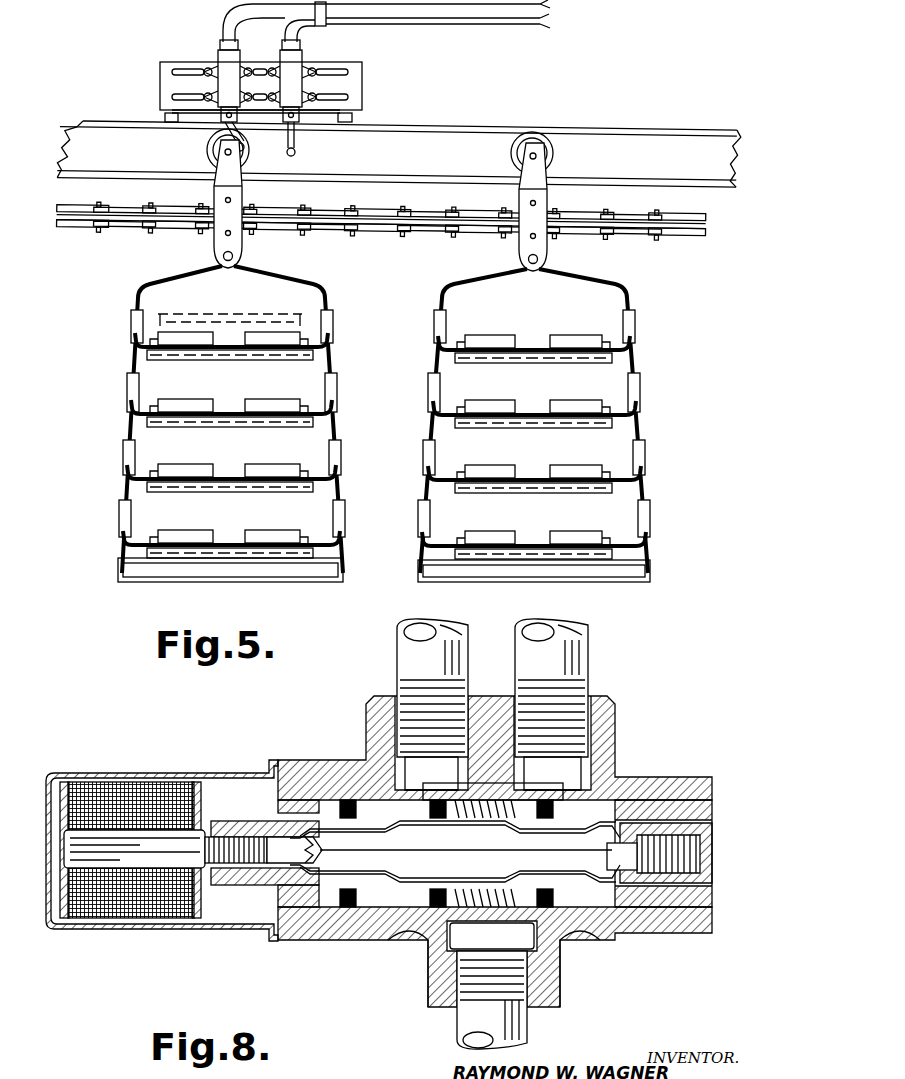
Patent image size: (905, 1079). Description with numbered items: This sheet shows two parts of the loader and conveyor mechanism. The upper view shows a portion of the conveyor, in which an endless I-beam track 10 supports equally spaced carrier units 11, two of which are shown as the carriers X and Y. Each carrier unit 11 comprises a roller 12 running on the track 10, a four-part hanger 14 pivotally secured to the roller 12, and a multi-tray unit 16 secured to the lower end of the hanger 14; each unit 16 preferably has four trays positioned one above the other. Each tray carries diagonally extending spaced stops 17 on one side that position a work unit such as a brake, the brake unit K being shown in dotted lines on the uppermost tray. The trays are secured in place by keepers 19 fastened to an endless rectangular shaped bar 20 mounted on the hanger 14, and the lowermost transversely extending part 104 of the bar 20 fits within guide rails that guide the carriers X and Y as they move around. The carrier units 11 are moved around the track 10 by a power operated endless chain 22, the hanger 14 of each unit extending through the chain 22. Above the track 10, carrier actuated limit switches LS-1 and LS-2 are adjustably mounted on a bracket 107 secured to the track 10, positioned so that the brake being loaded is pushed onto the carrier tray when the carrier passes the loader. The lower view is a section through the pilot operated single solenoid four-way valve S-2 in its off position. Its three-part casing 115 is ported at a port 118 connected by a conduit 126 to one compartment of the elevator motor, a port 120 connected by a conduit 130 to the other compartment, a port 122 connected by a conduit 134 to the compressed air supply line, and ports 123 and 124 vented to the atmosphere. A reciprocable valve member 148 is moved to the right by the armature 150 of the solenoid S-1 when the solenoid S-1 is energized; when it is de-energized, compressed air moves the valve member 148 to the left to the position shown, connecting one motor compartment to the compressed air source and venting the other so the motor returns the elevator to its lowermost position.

In FIG. 5, the I-beam track 10 is at (632, 142).
In FIG. 5, the carrier unit 11 is at (125, 357).
In FIG. 5, the roller 12 is at (208, 150).
In FIG. 5, the four-part hanger 14 is at (241, 190).
In FIG. 5, the multi-tray unit 16 is at (298, 448).
In FIG. 5, the stops 17 is at (265, 340).
In FIG. 5, the keepers 19 is at (128, 392).
In FIG. 5, the endless rectangular shaped bar 20 is at (125, 485).
In FIG. 5, the endless chain 22 is at (430, 228).
In FIG. 5, the lowermost transversely extending part 104 is at (155, 575).
In FIG. 5, the bracket 107 is at (352, 90).
In FIG. 5, the limit switch LS-1 is at (227, 60).
In FIG. 5, the limit switch LS-2 is at (296, 63).
In FIG. 5, the brake unit K is at (193, 316).
In FIG. 5, the carrier X is at (228, 448).
In FIG. 5, the carrier Y is at (532, 451).
In FIG. 8, the solenoid S-1 is at (172, 782).
In FIG. 8, the pilot operated single solenoid four-way valve S-2 is at (339, 738).
In FIG. 8, the three-part casing 115 is at (617, 938).
In FIG. 8, the port 118 is at (405, 695).
In FIG. 8, the port 120 is at (563, 720).
In FIG. 8, the port 122 is at (450, 1009).
In FIG. 8, the port 123 is at (700, 823).
In FIG. 8, the port 124 is at (286, 888).
In FIG. 8, the conduit 126 is at (402, 655).
In FIG. 8, the conduit 130 is at (567, 658).
In FIG. 8, the conduit 134 is at (534, 1036).
In FIG. 8, the reciprocable valve member 148 is at (396, 876).
In FIG. 8, the armature 150 is at (119, 910).